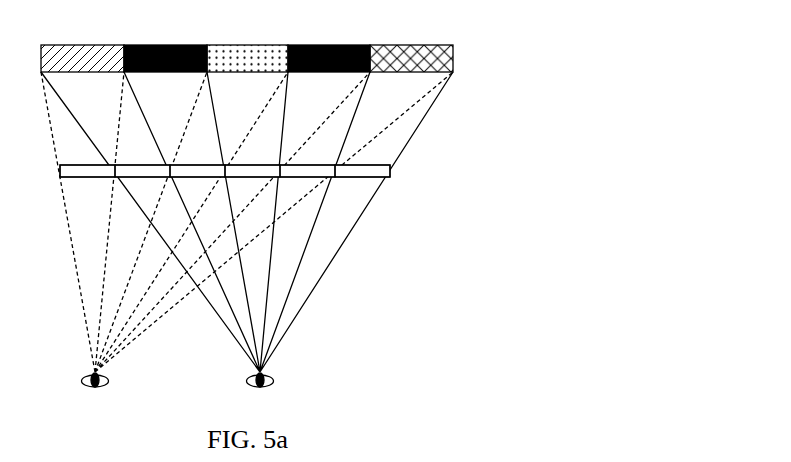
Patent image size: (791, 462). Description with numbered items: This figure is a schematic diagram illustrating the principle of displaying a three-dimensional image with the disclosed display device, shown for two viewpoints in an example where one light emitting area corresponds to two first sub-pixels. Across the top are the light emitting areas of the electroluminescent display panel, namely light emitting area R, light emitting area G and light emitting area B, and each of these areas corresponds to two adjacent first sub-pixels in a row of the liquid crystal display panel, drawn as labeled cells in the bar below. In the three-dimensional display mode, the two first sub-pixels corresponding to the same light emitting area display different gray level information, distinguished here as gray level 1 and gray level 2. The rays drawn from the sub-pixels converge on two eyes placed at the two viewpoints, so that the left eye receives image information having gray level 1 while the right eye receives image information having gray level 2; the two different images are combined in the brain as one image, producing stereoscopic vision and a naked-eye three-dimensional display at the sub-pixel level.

The gray level 1 is at (197, 164).
The gray level 2 is at (252, 164).
The light emitting area R is at (82, 58).
The light emitting area G is at (247, 58).
The light emitting area B is at (411, 58).